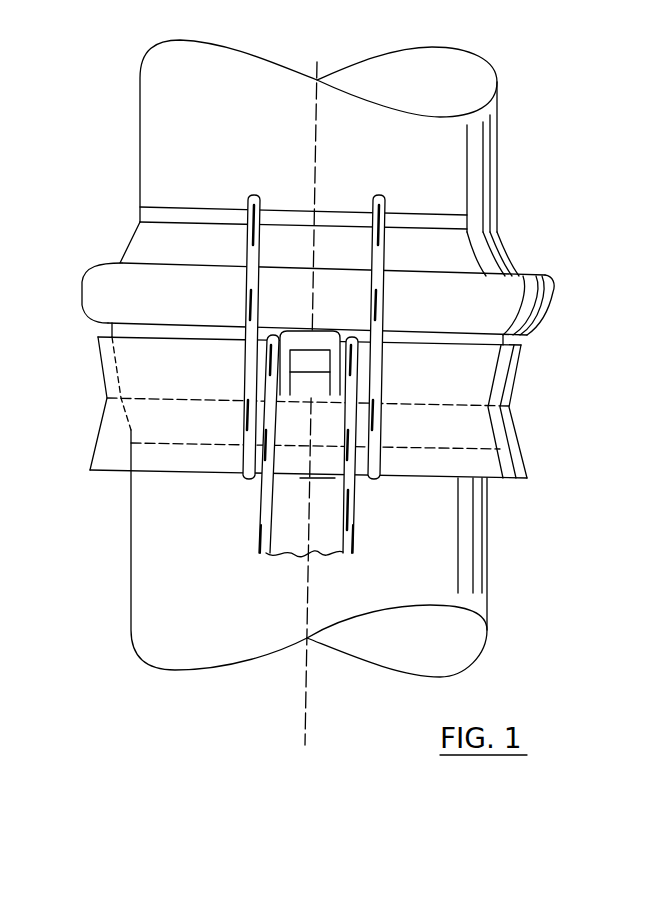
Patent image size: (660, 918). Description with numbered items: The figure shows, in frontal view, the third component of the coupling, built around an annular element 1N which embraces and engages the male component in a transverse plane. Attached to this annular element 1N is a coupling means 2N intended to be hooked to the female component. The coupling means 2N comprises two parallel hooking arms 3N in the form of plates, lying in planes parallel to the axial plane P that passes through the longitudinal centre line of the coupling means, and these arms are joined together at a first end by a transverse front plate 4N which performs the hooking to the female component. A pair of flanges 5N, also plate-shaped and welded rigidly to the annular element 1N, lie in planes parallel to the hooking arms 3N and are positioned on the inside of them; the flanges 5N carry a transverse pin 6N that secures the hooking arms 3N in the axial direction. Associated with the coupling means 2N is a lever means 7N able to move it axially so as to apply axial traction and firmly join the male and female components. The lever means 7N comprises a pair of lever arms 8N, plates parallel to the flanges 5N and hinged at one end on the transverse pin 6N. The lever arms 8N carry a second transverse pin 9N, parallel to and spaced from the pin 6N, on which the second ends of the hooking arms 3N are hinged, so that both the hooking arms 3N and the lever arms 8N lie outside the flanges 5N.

The annular element 1N is at (520, 435).
The coupling means 2N is at (403, 246).
The hooking arms 3N is at (243, 310).
The transverse front plate 4N is at (297, 216).
The flanges 5N is at (262, 383).
The transverse pin 6N is at (307, 371).
The lever means 7N is at (357, 515).
The lever arms 8N is at (258, 543).
The second transverse pin 9N is at (314, 456).
The axial plane P is at (305, 704).